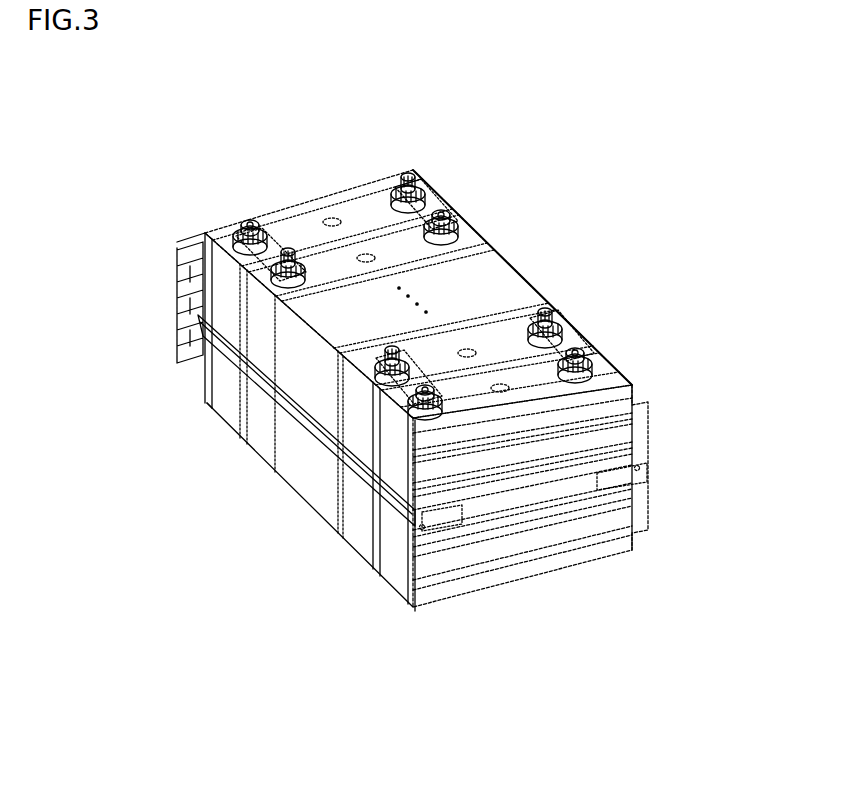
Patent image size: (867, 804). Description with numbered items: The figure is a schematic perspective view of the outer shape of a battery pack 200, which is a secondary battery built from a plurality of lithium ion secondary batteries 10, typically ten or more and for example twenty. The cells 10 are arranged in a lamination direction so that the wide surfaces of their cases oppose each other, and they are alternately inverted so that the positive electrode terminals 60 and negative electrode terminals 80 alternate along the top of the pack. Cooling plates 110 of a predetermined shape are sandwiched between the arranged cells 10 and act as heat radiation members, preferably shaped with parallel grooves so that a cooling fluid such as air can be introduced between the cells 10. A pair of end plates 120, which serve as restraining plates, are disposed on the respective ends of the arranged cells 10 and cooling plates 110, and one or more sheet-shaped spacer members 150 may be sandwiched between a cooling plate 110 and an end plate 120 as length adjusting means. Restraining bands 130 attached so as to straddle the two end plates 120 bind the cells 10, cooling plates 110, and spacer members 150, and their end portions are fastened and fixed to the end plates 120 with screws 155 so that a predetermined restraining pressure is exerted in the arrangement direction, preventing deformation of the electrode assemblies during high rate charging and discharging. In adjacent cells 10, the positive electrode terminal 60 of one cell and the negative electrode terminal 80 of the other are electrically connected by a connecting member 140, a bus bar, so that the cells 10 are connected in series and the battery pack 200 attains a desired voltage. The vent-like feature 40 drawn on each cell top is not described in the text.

The battery pack 200 is at (670, 132).
The lithium ion secondary battery 10 is at (392, 242).
The vent 40 is at (331, 212).
The positive electrode terminal 60 is at (262, 218).
The negative electrode terminal 80 is at (290, 250).
The cooling plate 110 is at (245, 440).
The end plate 120 is at (177, 250).
The restraining band 130 is at (353, 500).
The connecting member 140 is at (283, 228).
The spacer member 150 is at (645, 383).
The screw 155 is at (640, 468).